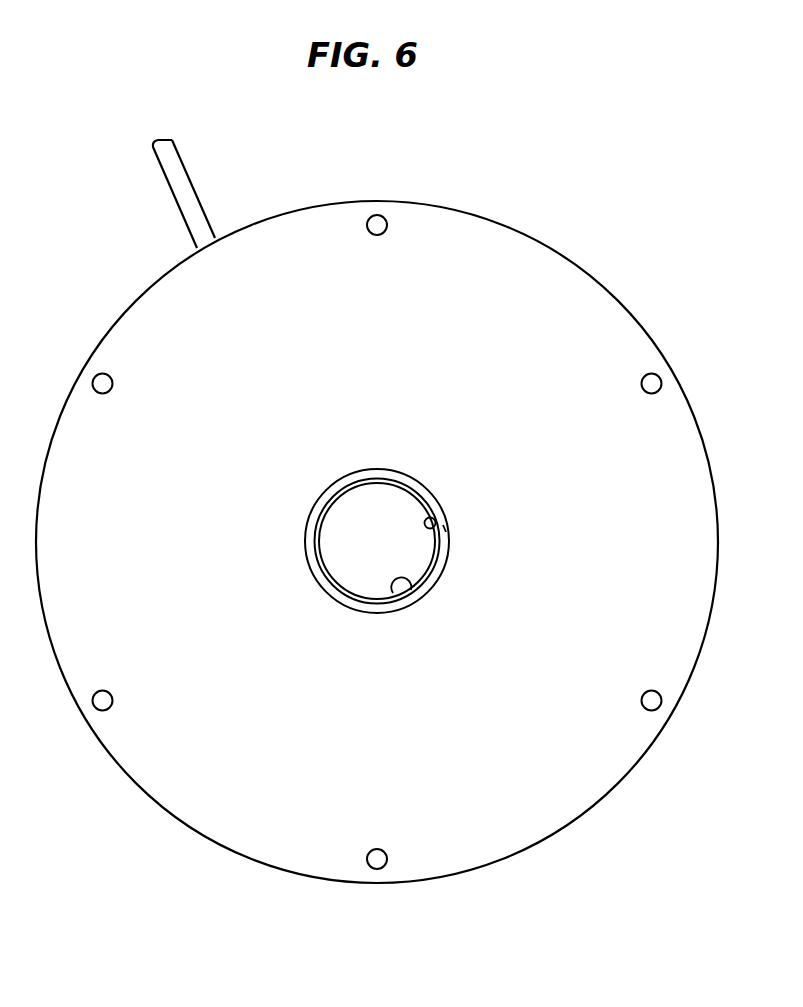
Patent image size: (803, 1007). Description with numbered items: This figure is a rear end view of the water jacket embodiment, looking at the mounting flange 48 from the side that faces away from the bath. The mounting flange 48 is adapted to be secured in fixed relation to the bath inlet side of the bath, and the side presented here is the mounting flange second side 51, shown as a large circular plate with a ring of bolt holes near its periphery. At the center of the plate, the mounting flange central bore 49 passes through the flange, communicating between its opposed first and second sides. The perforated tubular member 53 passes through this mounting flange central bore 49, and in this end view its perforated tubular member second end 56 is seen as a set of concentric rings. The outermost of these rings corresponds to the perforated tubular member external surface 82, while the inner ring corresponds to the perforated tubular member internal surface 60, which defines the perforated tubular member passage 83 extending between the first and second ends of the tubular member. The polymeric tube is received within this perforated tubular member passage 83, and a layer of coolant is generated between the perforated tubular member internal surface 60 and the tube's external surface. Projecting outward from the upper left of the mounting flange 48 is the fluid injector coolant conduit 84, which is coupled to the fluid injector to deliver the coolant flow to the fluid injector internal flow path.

The mounting flange 48 is at (550, 245).
The mounting flange second side 51 is at (592, 315).
The fluid injector coolant conduit 84 is at (178, 172).
The perforated tubular member 53 is at (388, 508).
The perforated tubular member second end 56 is at (388, 508).
The perforated tubular member external surface 82 is at (407, 483).
The mounting flange central bore 49 is at (435, 519).
The perforated tubular member internal surface 60 is at (394, 598).
The perforated tubular member passage 83 is at (390, 554).